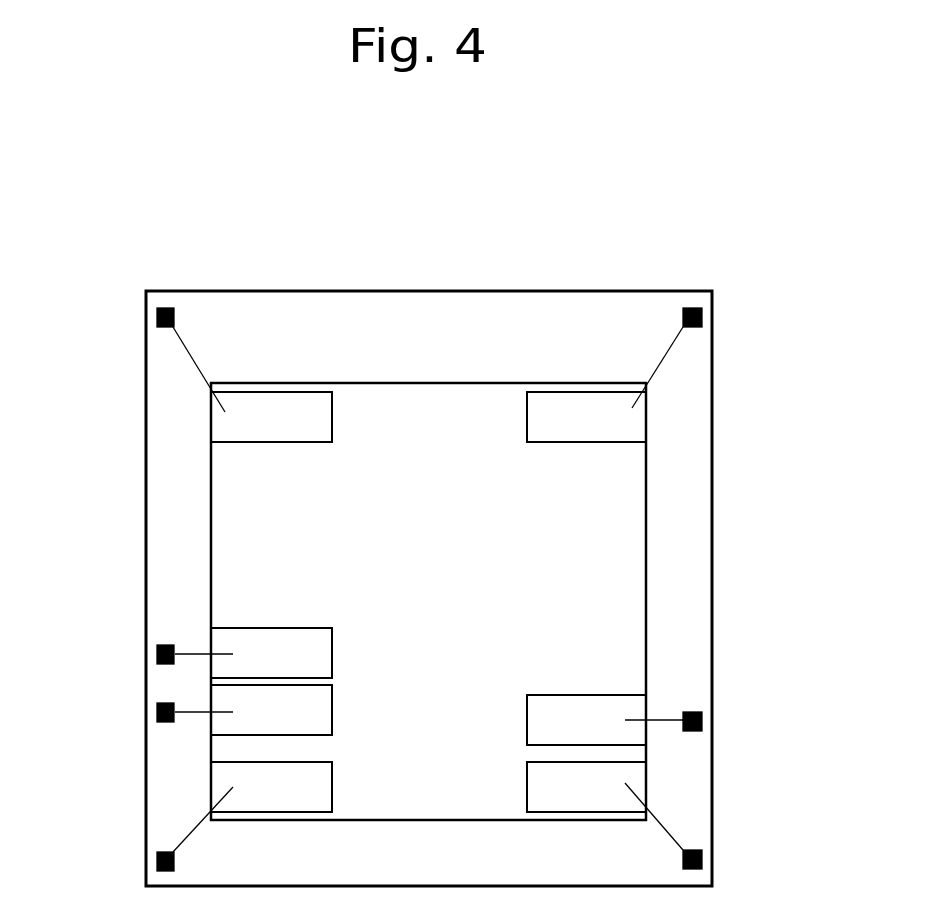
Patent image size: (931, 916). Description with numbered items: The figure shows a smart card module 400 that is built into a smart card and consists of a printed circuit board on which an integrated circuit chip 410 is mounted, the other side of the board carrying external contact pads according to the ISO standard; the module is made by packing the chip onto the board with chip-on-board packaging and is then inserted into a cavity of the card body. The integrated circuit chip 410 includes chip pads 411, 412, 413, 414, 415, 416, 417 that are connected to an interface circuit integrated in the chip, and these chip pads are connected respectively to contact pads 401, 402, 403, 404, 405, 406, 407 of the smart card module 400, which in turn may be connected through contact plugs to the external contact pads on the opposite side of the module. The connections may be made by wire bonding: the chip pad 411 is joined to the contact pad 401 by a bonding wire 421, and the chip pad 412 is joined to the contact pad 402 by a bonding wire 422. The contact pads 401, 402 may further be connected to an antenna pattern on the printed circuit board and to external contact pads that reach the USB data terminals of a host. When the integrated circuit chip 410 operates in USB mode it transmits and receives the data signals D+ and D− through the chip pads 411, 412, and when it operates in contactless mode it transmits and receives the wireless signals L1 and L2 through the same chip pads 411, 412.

The smart card module 400 is at (530, 291).
The contact pad 401 is at (156, 316).
The contact pad 402 is at (703, 314).
The contact pad 403 is at (703, 718).
The contact pad 404 is at (703, 856).
The contact pad 405 is at (156, 860).
The contact pad 406 is at (156, 710).
The contact pad 407 is at (156, 652).
The integrated circuit chip 410 is at (572, 383).
The chip pad 411 is at (333, 414).
The chip pad 412 is at (526, 414).
The chip pad 413 is at (526, 720).
The chip pad 414 is at (526, 786).
The chip pad 415 is at (333, 788).
The chip pad 416 is at (333, 710).
The chip pad 417 is at (333, 652).
The bonding wire 421 is at (188, 346).
The bonding wire 422 is at (665, 346).